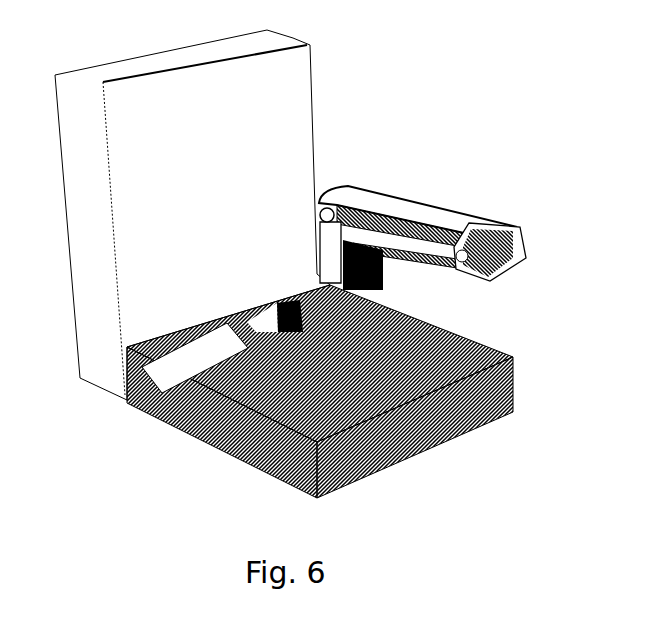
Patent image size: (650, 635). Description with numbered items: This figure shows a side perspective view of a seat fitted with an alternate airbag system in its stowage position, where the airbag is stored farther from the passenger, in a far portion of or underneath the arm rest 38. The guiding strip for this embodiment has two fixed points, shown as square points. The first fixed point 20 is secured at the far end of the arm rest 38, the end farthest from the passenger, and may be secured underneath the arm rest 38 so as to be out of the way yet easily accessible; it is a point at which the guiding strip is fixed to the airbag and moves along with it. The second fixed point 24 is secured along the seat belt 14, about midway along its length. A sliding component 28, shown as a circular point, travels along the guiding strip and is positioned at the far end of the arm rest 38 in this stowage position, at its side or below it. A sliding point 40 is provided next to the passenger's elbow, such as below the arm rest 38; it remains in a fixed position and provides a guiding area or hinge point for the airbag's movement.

The seat belt 14 is at (198, 350).
The second fixed point 24 is at (190, 433).
The arm rest 38 is at (425, 212).
The sliding point 40 is at (343, 192).
The first fixed point 20 is at (512, 267).
The sliding component 28 is at (475, 277).